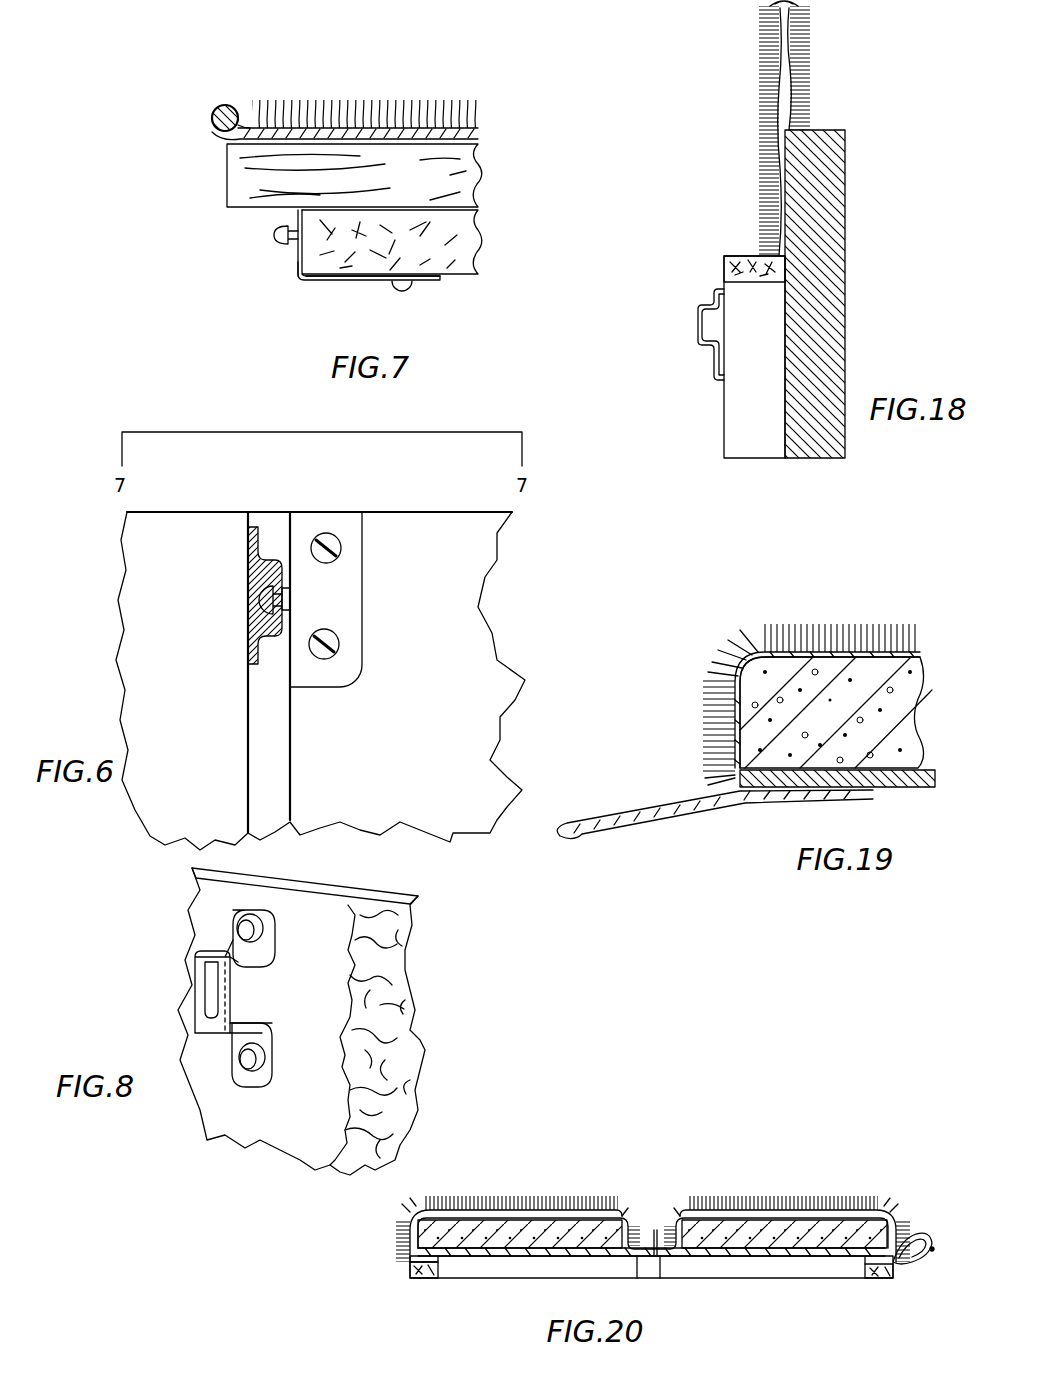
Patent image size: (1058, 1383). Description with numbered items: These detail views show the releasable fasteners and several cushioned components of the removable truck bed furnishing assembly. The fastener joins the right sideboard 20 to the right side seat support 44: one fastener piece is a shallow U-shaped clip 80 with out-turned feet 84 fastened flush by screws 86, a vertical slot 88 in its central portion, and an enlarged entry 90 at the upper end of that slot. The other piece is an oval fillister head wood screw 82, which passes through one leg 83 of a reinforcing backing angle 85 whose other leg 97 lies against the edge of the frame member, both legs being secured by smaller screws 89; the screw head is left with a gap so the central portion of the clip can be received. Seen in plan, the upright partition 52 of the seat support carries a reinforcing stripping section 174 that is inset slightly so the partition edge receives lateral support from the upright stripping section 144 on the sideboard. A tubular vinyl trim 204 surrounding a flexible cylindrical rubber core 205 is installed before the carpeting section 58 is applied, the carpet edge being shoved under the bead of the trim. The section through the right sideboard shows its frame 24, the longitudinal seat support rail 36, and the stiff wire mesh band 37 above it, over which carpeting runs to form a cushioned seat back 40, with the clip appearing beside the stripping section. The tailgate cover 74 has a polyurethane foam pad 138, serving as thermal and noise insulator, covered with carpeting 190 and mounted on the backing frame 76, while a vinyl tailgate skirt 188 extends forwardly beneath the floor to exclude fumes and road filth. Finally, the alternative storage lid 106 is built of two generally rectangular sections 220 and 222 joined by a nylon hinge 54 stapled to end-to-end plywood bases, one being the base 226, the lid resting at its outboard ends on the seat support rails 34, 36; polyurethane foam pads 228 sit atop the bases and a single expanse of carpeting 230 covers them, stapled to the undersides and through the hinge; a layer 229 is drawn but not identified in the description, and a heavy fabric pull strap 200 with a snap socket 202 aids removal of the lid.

In FIG. 18, the right sideboard 20 is at (850, 360).
In FIG. 20, the right sideboard 20 is at (636, 1273).
In FIG. 18, the frame 24 is at (847, 306).
In FIG. 20, the seat support rail 34 is at (432, 1272).
In FIG. 18, the seat support rail 36 is at (740, 257).
In FIG. 20, the seat support rail 36 is at (874, 1280).
In FIG. 18, the wire mesh band 37 is at (772, 38).
In FIG. 18, the cushioned seat back 40 is at (772, 68).
In FIG. 7, the right side seat support 44 is at (487, 114).
In FIG. 6, the right side seat support 44 is at (470, 685).
In FIG. 7, the upright partition 52 is at (467, 195).
In FIG. 6, the upright partition 52 is at (270, 525).
In FIG. 20, the fabric nylon hinge 54 is at (660, 1234).
In FIG. 7, the carpeting section 58 is at (405, 118).
In FIG. 19, the tailgate cover 74 is at (842, 623).
In FIG. 19, the backing frame 76 is at (888, 789).
In FIG. 6, the U-shaped clip 80 is at (290, 630).
In FIG. 8, the U-shaped clip 80 is at (200, 1022).
In FIG. 18, the U-shaped clip 80 is at (698, 340).
In FIG. 7, the fillister head wood screw 82 is at (272, 236).
In FIG. 6, the fillister head wood screw 82 is at (262, 606).
In FIG. 7, the leg of backing angle 83 is at (296, 264).
In FIG. 6, the out-turned feet 84 is at (256, 558).
In FIG. 8, the out-turned feet 84 is at (266, 948).
In FIG. 7, the reinforcing backing angle 85 is at (330, 286).
In FIG. 6, the reinforcing backing angle 85 is at (338, 600).
In FIG. 6, the screws 86 is at (252, 538).
In FIG. 8, the screws 86 is at (252, 930).
In FIG. 6, the vertical slot 88 is at (274, 574).
In FIG. 8, the vertical slot 88 is at (205, 985).
In FIG. 7, the smaller screws 89 is at (408, 292).
In FIG. 6, the smaller screws 89 is at (331, 535).
In FIG. 6, the enlarged entry 90 is at (278, 562).
In FIG. 8, the enlarged entry 90 is at (214, 962).
In FIG. 7, the leg of backing angle 97 is at (372, 284).
In FIG. 6, the leg of backing angle 97 is at (352, 545).
In FIG. 20, the storage lid 106 is at (648, 1220).
In FIG. 19, the polyurethane foam pad 138 is at (905, 698).
In FIG. 6, the upright stripping section 144 is at (160, 686).
In FIG. 18, the upright stripping section 144 is at (724, 420).
In FIG. 7, the reinforcing stripping section 174 is at (478, 278).
In FIG. 6, the reinforcing stripping section 174 is at (465, 784).
In FIG. 19, the vinyl tailgate skirt 188 is at (652, 822).
In FIG. 19, the carpeting 190 is at (785, 640).
In FIG. 20, the pull strap 200 is at (922, 1236).
In FIG. 20, the snap socket 202 is at (928, 1258).
In FIG. 7, the tubular vinyl trim 204 is at (240, 122).
In FIG. 7, the rubber core 205 is at (211, 128).
In FIG. 20, the rectangular section 220 is at (546, 1208).
In FIG. 20, the rectangular section 222 is at (768, 1208).
In FIG. 20, the plywood base 226 is at (764, 1258).
In FIG. 20, the polyurethane foam pads 228 is at (518, 1232).
In FIG. 20, the backing layer 229 is at (506, 1257).
In FIG. 20, the carpeting 230 is at (486, 1216).